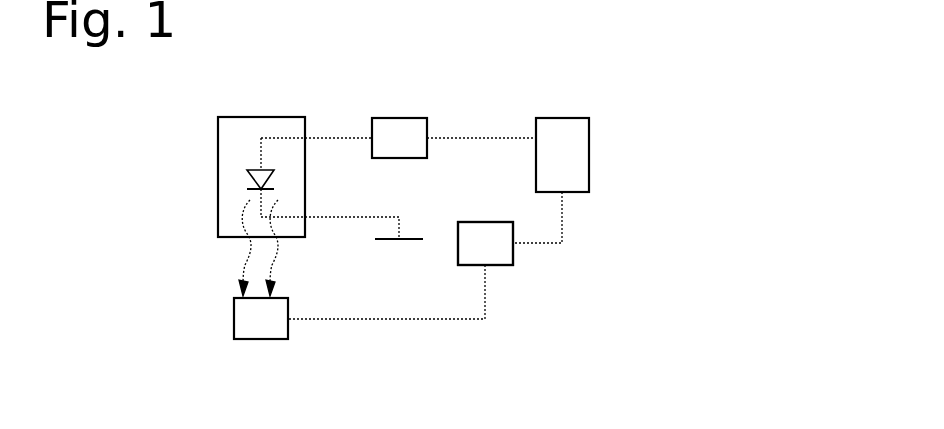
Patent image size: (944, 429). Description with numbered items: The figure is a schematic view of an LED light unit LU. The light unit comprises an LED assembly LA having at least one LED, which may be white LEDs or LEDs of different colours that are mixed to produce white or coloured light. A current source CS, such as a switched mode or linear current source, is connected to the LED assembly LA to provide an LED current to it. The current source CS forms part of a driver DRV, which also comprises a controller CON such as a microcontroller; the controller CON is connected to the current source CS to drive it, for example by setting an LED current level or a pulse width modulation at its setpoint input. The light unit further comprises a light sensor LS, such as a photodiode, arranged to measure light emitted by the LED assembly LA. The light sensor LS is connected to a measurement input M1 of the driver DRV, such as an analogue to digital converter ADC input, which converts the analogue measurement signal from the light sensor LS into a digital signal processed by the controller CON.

The LED light unit LU is at (150, 152).
The LED assembly LA is at (251, 130).
The current source CS is at (404, 130).
The controller CON is at (568, 135).
The driver DRV is at (642, 171).
The analogue to digital converter ADC is at (504, 253).
The measurement input M1 is at (487, 264).
The light sensor LS is at (250, 328).